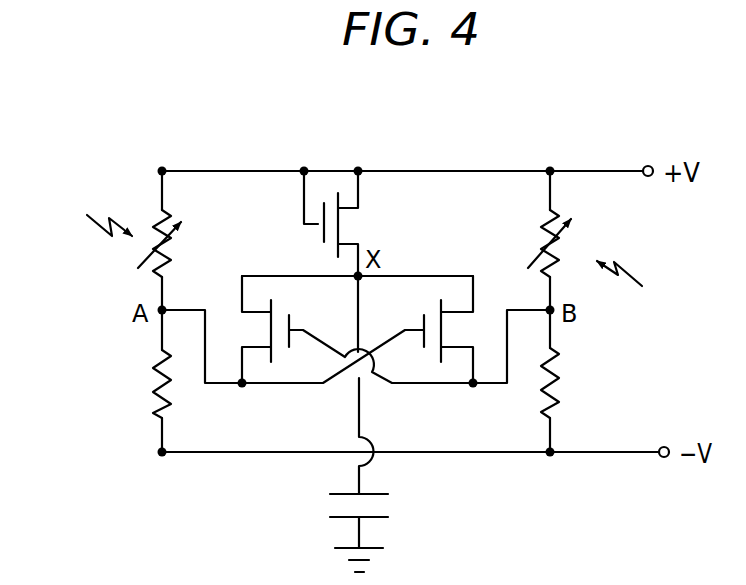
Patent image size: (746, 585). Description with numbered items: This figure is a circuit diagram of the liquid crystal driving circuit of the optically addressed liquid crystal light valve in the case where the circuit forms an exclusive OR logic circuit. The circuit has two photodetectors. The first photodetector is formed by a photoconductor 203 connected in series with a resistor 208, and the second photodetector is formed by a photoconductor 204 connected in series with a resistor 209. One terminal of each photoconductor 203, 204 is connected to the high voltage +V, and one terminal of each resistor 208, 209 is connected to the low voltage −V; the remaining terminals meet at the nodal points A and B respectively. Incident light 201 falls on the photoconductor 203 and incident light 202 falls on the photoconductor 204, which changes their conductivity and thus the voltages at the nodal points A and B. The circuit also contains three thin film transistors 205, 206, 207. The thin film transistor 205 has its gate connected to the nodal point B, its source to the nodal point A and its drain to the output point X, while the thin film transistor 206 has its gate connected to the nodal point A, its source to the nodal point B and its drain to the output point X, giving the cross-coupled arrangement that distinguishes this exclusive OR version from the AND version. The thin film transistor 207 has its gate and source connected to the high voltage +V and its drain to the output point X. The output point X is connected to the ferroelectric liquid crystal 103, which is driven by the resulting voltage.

The write light 201 is at (98, 213).
The write light 202 is at (642, 287).
The photoconductor 203 is at (144, 256).
The photoconductor 204 is at (572, 228).
The thin film transistor 205 is at (285, 306).
The thin film transistor 206 is at (440, 303).
The thin film transistor 207 is at (318, 233).
The resistor 208 is at (150, 388).
The resistor 209 is at (560, 388).
The ferroelectric liquid crystal 103 is at (396, 506).